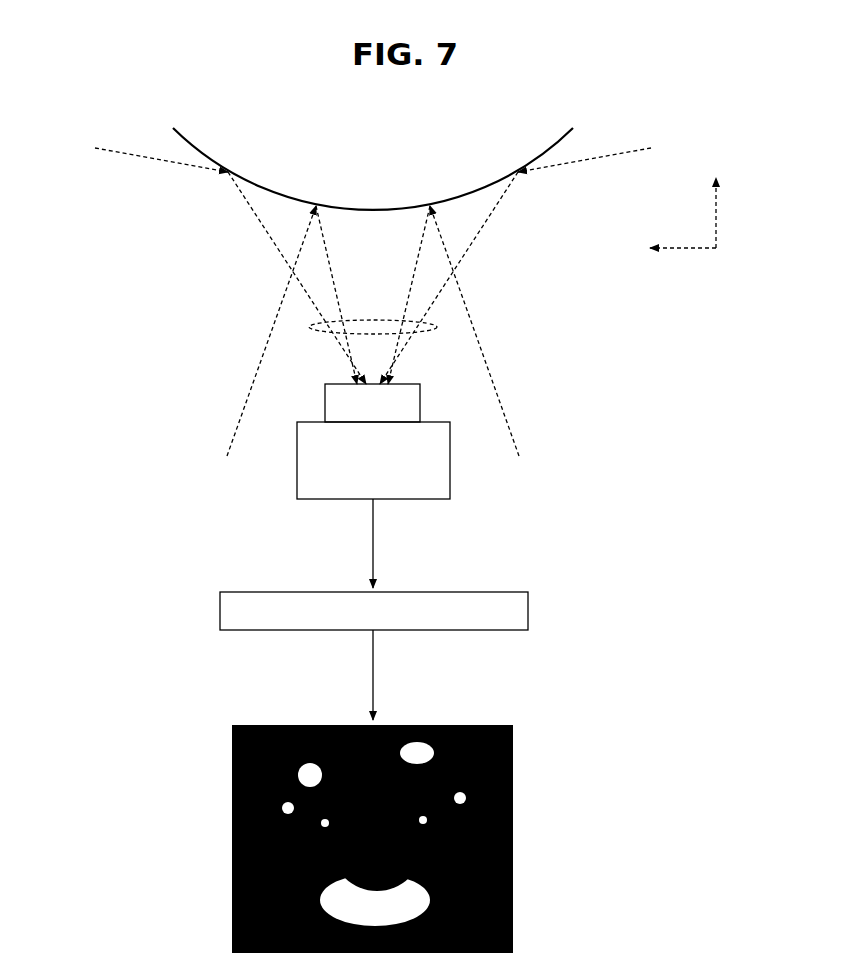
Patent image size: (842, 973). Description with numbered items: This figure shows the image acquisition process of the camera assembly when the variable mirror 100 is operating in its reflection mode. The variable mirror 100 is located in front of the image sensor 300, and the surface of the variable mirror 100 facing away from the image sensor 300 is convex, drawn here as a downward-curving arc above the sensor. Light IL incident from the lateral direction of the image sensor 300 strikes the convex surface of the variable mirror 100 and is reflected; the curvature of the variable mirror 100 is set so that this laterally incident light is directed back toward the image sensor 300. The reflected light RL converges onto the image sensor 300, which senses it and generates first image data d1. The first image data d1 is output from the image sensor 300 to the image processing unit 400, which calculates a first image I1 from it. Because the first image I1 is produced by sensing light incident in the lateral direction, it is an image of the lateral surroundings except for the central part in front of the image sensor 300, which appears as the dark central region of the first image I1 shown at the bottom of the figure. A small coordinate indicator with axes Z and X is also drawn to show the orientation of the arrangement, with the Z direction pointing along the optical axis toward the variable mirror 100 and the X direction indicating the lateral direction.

The variable mirror 100 is at (560, 141).
The incident light IL is at (130, 151).
The reflected light RL is at (374, 320).
The image sensor 300 is at (438, 502).
The first image data d1 is at (360, 543).
The image processing unit 400 is at (475, 590).
The first image I1 is at (515, 815).
The Z axis Z is at (719, 199).
The X axis X is at (674, 251).